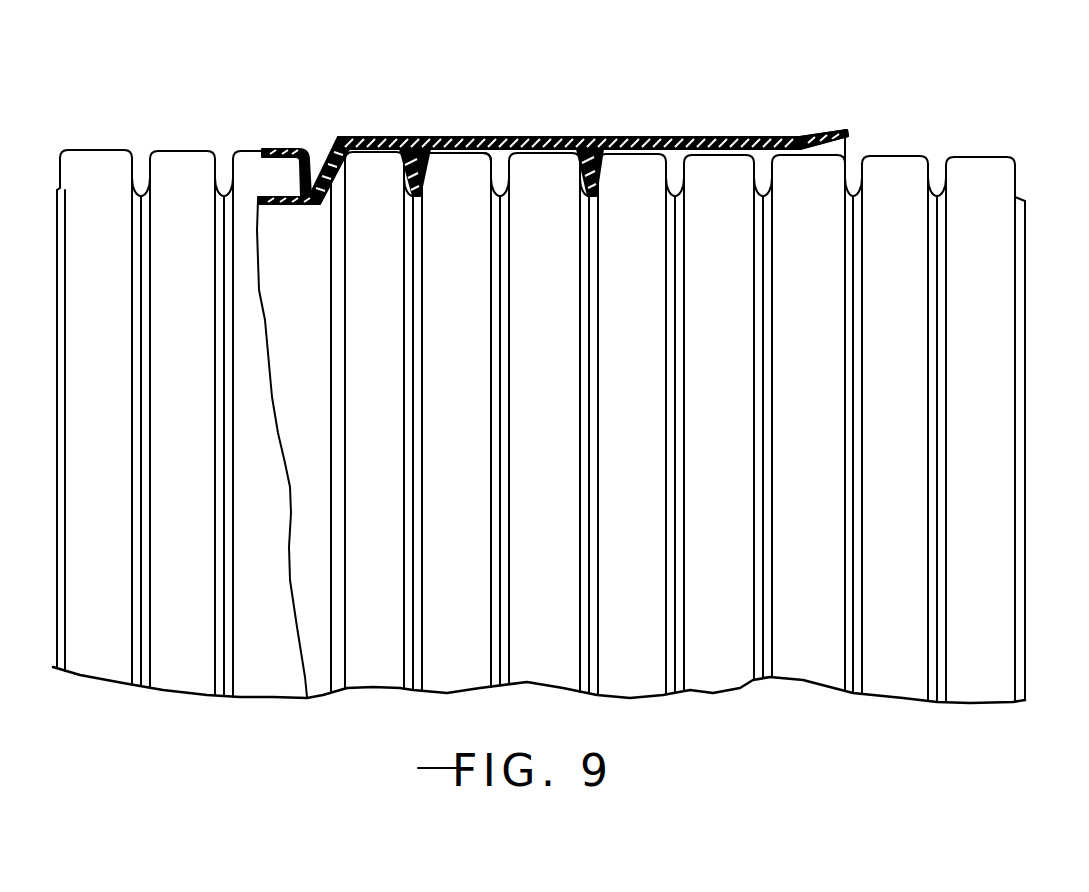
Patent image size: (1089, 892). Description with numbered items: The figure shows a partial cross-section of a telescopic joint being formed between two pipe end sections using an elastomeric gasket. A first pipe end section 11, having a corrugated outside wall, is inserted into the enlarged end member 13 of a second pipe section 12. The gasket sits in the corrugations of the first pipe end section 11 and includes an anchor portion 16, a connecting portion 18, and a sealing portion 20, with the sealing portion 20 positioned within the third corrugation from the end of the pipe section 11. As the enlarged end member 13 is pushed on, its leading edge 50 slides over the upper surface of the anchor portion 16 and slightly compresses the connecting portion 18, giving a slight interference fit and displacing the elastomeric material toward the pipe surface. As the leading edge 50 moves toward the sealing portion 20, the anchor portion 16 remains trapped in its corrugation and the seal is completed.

The first pipe end section 11 is at (982, 157).
The second pipe section 12 is at (177, 148).
The enlarged end member 13 is at (565, 135).
The anchor portion 16 is at (402, 175).
The connecting portion 18 is at (505, 148).
The sealing portion 20 is at (633, 167).
The leading edge 50 is at (845, 130).